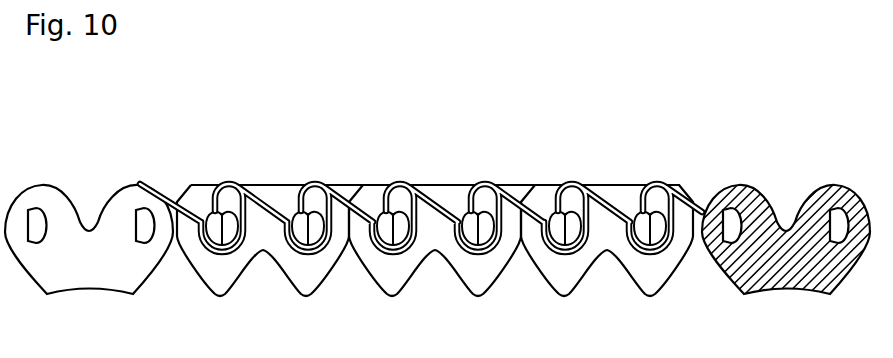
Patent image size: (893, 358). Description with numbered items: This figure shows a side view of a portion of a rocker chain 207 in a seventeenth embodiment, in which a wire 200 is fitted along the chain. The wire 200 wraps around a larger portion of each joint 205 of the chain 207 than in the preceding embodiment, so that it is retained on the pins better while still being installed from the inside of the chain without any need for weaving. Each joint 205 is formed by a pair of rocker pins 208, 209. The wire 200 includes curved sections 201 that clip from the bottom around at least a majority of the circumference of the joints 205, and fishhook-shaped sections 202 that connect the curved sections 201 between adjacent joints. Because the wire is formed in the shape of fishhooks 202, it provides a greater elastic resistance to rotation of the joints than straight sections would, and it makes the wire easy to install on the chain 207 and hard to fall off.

The wire 200 is at (262, 200).
The curved section 201 is at (456, 262).
The fishhook-shaped section 202 is at (563, 183).
The joint 205 is at (213, 198).
The chain 207 is at (703, 108).
The rocker pin 208 is at (280, 255).
The rocker pin 209 is at (328, 242).